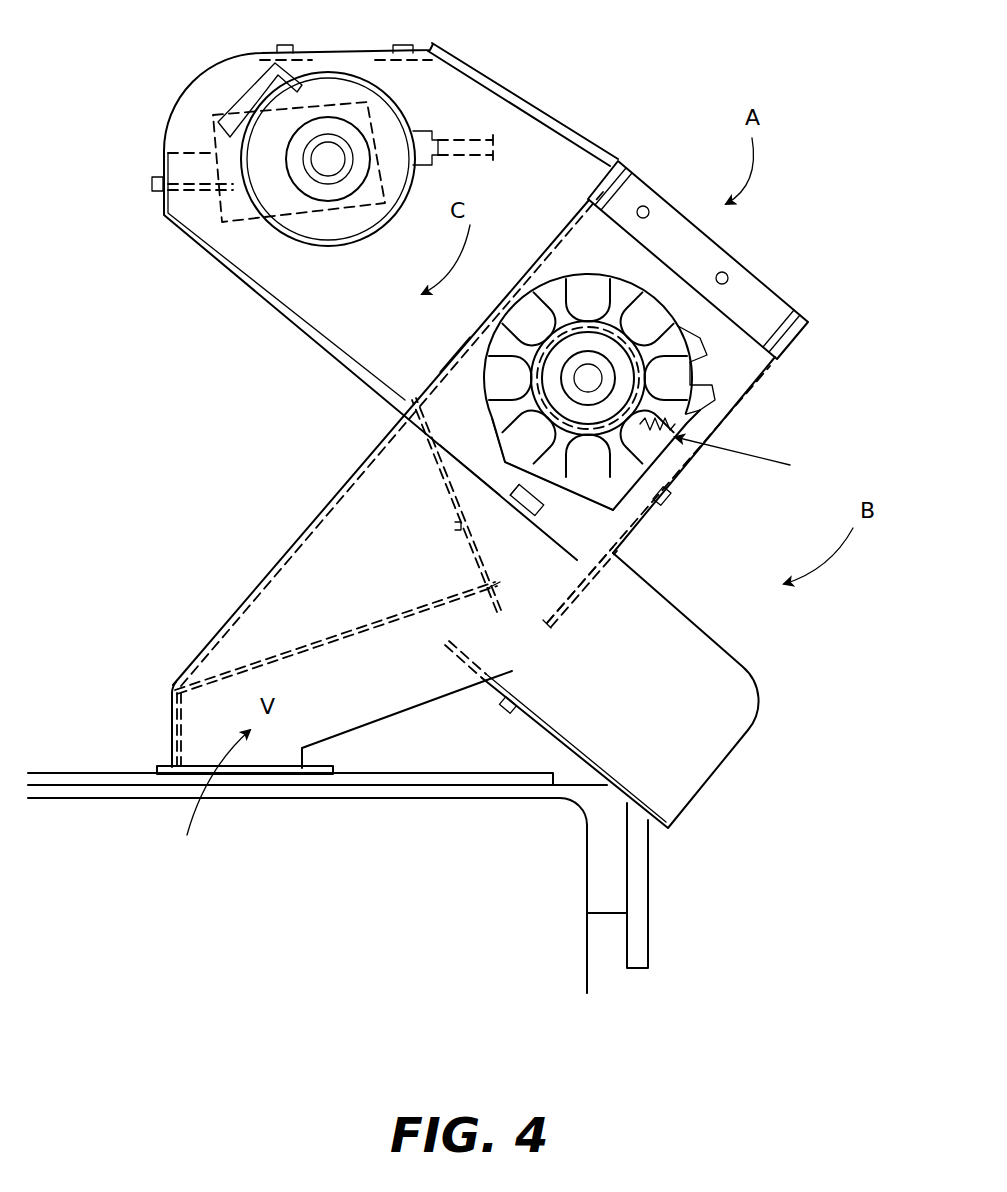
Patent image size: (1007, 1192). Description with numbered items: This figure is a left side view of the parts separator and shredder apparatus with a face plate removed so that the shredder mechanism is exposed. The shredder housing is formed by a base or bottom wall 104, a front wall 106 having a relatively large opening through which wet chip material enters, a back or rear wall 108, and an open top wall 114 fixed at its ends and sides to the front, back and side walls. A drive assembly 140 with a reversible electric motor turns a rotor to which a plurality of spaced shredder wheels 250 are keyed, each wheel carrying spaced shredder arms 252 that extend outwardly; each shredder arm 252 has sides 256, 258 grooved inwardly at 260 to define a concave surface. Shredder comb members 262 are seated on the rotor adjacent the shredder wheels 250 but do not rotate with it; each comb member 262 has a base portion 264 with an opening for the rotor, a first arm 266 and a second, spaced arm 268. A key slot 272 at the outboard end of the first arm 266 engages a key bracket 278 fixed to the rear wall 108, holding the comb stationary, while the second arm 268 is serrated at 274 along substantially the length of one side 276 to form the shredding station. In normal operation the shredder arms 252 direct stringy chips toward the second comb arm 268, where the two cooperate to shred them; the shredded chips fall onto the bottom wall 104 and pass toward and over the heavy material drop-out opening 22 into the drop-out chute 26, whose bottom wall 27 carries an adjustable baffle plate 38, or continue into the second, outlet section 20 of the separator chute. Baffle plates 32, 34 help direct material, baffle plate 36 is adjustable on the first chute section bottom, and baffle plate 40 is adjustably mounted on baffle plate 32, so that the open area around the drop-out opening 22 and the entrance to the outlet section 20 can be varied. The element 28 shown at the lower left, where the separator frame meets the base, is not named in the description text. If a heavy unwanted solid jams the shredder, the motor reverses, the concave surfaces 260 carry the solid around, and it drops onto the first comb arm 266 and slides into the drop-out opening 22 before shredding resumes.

The second, outlet section 20 is at (447, 695).
The heavy material drop-out opening 22 is at (433, 625).
The drop-out chute 26 is at (732, 733).
The bottom wall 27 is at (590, 770).
The base plate 28 is at (160, 766).
The baffle plate 32 is at (470, 470).
The baffle plate 34 is at (245, 665).
The baffle plate 36 is at (553, 625).
The baffle plate 38 is at (508, 688).
The baffle plate 40 is at (490, 582).
The base or bottom wall 104 is at (643, 510).
The front wall 106 is at (613, 163).
The back or rear wall 108 is at (483, 490).
The open top wall 114 is at (452, 362).
The drive assembly 140 is at (388, 97).
The shredder wheel 250 is at (674, 326).
The shredder arm 252 is at (660, 380).
The side 256 is at (707, 352).
The side 258 is at (697, 400).
The concave surface 260 is at (690, 374).
The shredder comb member 262 is at (583, 332).
The base portion 264 is at (690, 328).
The first arm 266 is at (530, 440).
The second, spaced arm 268 is at (665, 492).
The key slot 272 is at (615, 553).
The serrations 274 is at (640, 455).
The side 276 is at (754, 458).
The key bracket 278 is at (515, 512).